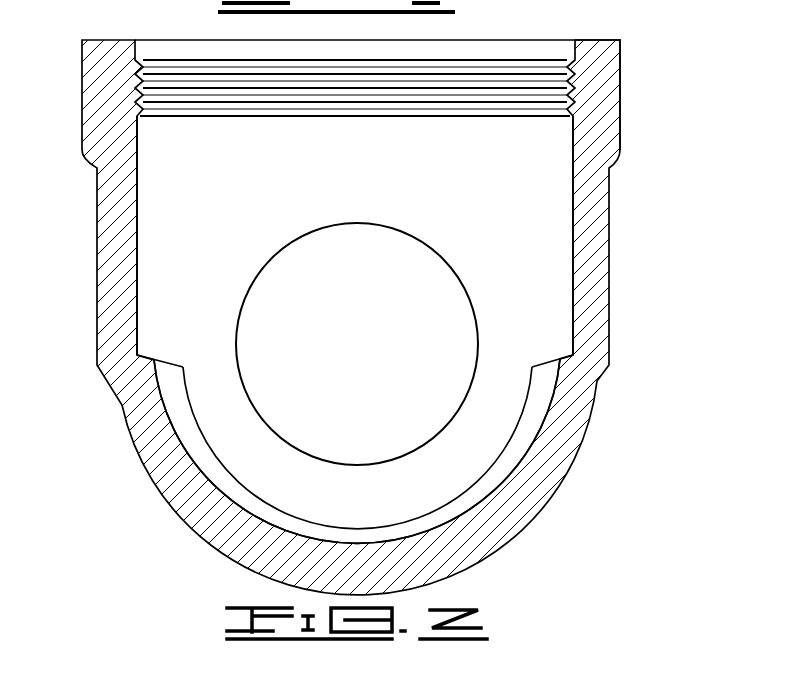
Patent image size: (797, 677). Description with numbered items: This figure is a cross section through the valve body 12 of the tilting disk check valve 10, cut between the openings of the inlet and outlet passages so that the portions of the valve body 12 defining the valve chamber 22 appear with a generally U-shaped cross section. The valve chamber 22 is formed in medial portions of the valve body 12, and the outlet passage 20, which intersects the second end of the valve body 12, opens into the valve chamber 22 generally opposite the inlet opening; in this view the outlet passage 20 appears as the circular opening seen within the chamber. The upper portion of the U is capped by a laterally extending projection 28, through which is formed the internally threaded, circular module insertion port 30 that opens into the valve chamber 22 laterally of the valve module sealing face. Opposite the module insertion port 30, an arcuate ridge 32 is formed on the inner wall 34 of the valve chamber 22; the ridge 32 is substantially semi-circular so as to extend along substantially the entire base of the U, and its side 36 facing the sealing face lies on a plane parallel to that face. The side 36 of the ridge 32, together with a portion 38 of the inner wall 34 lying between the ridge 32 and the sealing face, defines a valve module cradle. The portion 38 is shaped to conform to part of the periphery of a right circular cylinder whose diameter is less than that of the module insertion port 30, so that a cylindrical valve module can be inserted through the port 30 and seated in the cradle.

The tilting disk check valve 10 is at (612, 32).
The valve body 12 is at (602, 256).
The outlet passage 20 is at (333, 225).
The valve chamber 22 is at (163, 317).
The laterally extending projection 28 is at (608, 124).
The module insertion port 30 is at (176, 66).
The arcuate ridge 32 is at (183, 381).
The inner wall 34 is at (136, 219).
The side of the ridge 36 is at (507, 468).
The portion of the inner wall 38 is at (470, 516).